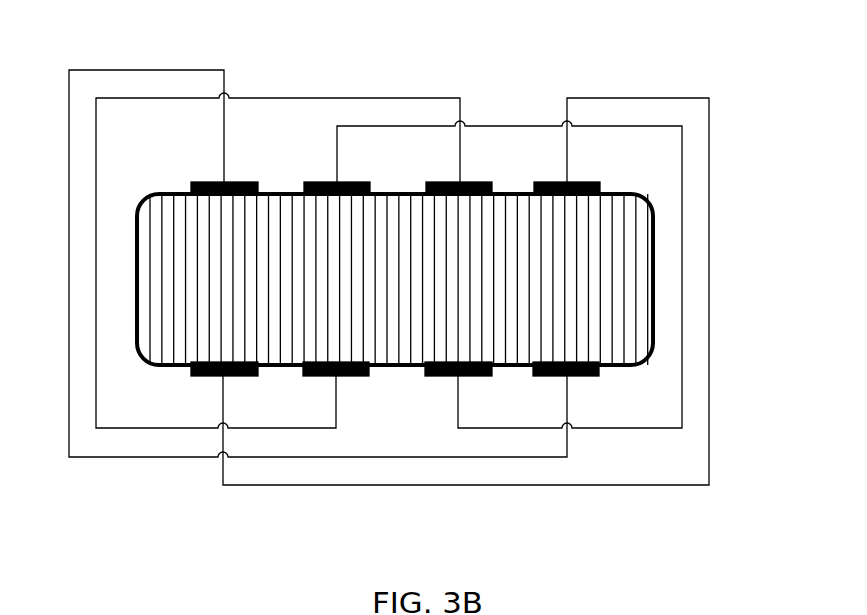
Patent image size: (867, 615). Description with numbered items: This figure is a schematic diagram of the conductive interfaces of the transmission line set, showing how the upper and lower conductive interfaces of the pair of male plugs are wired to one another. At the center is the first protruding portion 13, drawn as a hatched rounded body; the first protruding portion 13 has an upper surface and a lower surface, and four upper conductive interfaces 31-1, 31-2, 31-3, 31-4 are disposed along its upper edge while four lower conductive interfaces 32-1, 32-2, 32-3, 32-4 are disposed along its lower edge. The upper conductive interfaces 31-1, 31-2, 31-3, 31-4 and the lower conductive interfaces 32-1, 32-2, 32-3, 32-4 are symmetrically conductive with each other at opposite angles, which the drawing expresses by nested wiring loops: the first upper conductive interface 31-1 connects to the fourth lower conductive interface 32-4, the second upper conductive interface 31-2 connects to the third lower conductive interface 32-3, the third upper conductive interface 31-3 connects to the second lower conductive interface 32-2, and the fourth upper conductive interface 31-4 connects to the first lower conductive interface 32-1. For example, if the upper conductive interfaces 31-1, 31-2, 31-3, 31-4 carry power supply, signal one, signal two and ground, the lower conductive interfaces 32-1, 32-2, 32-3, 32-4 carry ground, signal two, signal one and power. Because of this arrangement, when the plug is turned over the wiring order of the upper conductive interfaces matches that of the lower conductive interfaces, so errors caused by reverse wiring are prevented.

The first protruding portion 13 is at (625, 308).
The upper conductive interface 31-1 is at (217, 182).
The upper conductive interface 31-2 is at (317, 182).
The upper conductive interface 31-3 is at (480, 182).
The upper conductive interface 31-4 is at (588, 182).
The lower conductive interface 32-1 is at (205, 376).
The lower conductive interface 32-2 is at (317, 376).
The lower conductive interface 32-3 is at (435, 376).
The lower conductive interface 32-4 is at (578, 376).